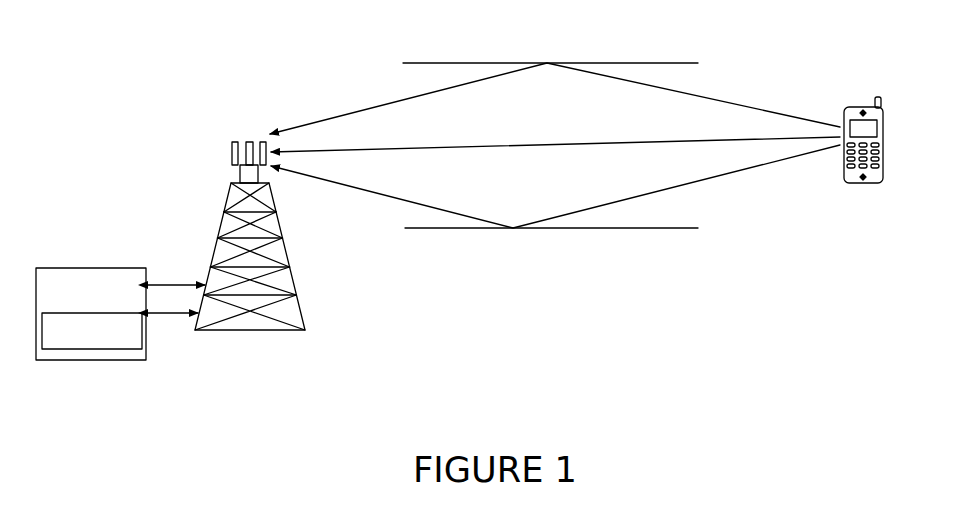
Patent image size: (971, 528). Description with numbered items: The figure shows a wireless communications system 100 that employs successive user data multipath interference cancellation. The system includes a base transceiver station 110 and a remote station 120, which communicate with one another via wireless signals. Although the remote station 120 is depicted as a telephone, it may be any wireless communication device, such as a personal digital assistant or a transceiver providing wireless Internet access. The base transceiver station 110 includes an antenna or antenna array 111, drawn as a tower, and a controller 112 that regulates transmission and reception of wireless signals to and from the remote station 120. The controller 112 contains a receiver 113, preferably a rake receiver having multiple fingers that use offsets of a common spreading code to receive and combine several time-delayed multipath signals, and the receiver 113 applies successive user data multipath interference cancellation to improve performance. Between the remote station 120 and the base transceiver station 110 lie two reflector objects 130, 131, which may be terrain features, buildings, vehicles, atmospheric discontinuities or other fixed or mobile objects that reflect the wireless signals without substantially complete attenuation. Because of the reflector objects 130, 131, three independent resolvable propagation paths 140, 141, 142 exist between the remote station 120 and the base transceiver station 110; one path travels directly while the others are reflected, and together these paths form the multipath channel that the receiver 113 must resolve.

The wireless communications system 100 is at (417, 325).
The base transceiver station 110 is at (332, 393).
The antenna or antenna array 111 is at (97, 267).
The controller 112 is at (287, 258).
The receiver 113 is at (88, 350).
The remote station 120 is at (883, 140).
The reflector object 130 is at (643, 63).
The reflector object 131 is at (617, 228).
The resolvable propagation path 140 is at (728, 102).
The resolvable propagation path 141 is at (555, 143).
The resolvable propagation path 142 is at (717, 177).